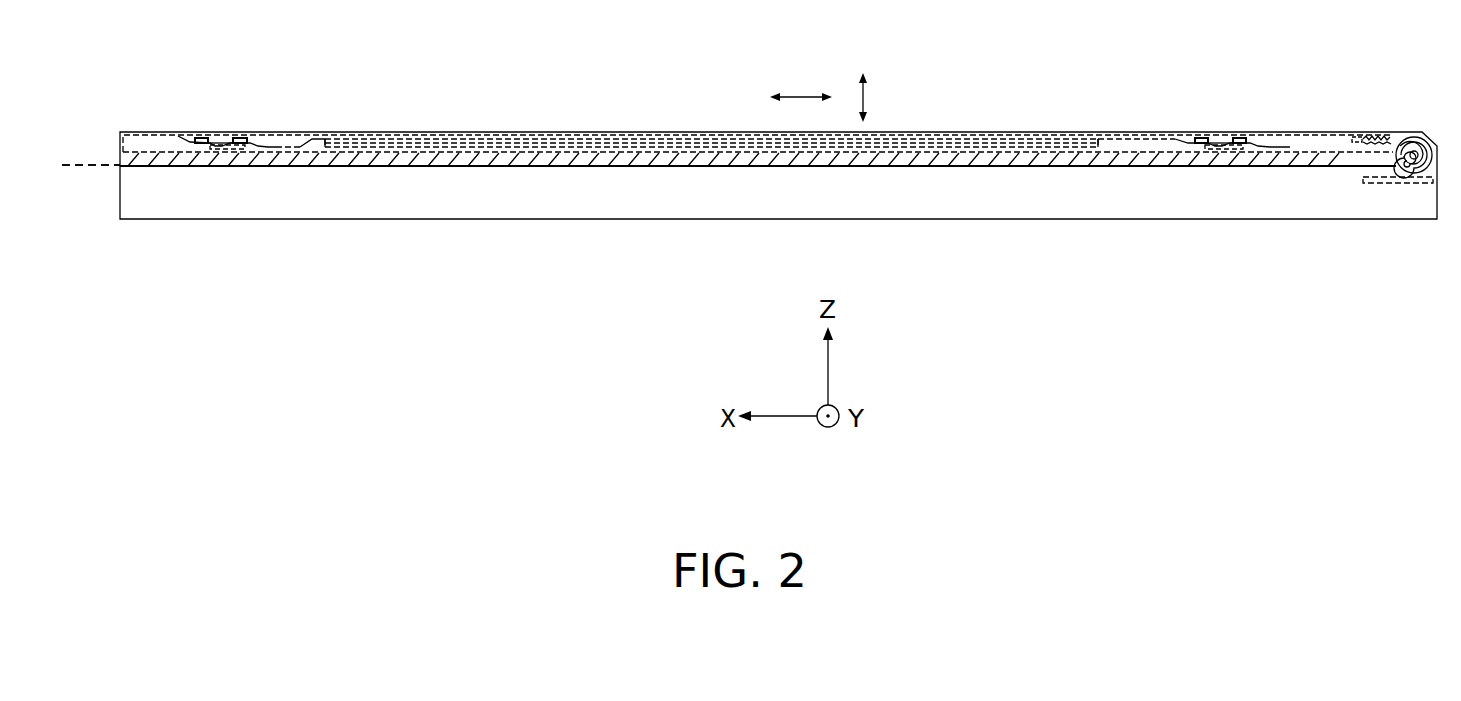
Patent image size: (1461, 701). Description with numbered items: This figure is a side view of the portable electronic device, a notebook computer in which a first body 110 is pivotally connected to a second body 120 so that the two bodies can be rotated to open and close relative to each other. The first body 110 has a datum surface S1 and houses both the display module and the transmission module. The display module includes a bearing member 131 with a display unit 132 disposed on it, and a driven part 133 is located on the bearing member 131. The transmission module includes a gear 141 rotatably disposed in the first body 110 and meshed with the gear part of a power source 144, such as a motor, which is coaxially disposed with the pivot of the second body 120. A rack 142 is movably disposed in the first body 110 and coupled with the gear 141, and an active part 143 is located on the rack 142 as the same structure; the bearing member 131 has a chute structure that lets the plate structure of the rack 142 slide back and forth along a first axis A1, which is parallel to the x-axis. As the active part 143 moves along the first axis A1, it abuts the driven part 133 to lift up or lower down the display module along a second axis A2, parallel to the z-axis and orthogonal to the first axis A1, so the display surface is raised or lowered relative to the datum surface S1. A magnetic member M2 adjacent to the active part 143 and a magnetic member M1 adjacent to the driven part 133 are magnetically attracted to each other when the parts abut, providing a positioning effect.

The first body 110 is at (148, 130).
The second body 120 is at (148, 220).
The bearing member 131 is at (257, 150).
The display unit 132 is at (383, 168).
The driven part 133 is at (225, 152).
The gear 141 is at (1397, 128).
The rack 142 is at (1367, 148).
The active part 143 is at (220, 134).
The power source 144 is at (1417, 172).
The magnetic member M1 is at (242, 130).
The magnetic member M2 is at (200, 132).
The datum surface S1 is at (97, 158).
The first axis A1 is at (801, 80).
The second axis A2 is at (882, 97).